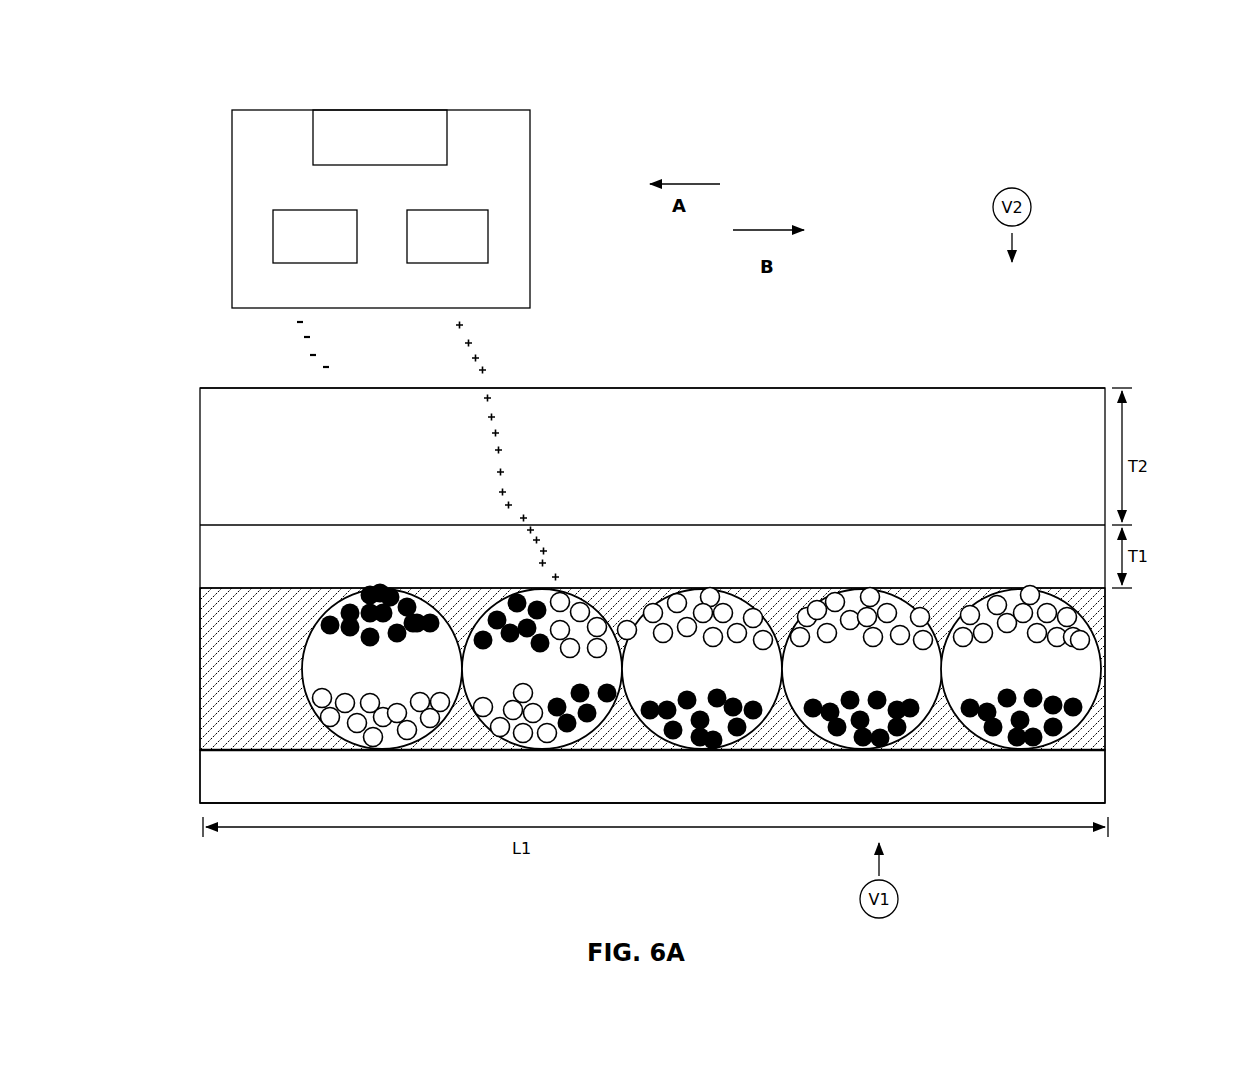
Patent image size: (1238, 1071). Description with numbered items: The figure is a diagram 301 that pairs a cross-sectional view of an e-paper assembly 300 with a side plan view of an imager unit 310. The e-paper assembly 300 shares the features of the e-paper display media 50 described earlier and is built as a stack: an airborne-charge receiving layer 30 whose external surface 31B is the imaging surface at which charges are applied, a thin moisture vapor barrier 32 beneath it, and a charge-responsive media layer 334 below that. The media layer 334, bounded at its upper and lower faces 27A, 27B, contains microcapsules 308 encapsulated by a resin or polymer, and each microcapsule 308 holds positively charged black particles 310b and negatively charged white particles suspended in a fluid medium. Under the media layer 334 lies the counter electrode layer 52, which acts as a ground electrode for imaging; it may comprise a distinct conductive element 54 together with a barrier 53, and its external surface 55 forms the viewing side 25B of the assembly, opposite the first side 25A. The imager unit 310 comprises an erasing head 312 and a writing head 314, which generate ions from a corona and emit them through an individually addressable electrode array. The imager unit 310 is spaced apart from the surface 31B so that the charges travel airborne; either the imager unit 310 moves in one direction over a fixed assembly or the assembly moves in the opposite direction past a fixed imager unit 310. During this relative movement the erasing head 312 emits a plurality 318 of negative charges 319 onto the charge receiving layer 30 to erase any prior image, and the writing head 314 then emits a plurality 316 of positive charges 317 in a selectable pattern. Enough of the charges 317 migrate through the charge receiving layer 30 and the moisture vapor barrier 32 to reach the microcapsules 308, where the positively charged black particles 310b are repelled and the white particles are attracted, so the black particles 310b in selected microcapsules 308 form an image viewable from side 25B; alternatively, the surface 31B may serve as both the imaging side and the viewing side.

The diagram 301 is at (770, 109).
The imager unit 310 is at (293, 108).
The erasing head 312 is at (305, 210).
The writing head 314 is at (488, 238).
The plurality of positive charges 316 is at (461, 357).
The positive charges 317 is at (486, 370).
The plurality of negative charges 318 is at (291, 350).
The negative charges 319 is at (323, 359).
The e-paper assembly 300 is at (710, 363).
The e-paper display media 50 is at (203, 384).
The airborne-charge receiving layer 30 is at (200, 462).
The moisture vapor barrier 32 is at (200, 557).
The external surface 31B is at (990, 387).
The first side 25A is at (1031, 385).
The viewing side 25B is at (1076, 797).
The top surface of electro-optic layer 27A is at (200, 618).
The bottom surface of electro-optic layer 27B is at (1105, 728).
The charge-responsive media layer 334 is at (200, 672).
The microcapsules 308 is at (1077, 671).
The black particles 310b is at (1050, 688).
The conductive element 54 is at (200, 750).
The counter electrode layer 52 is at (198, 783).
The barrier 53 is at (300, 794).
The external surface of counter electrode layer 55 is at (942, 802).